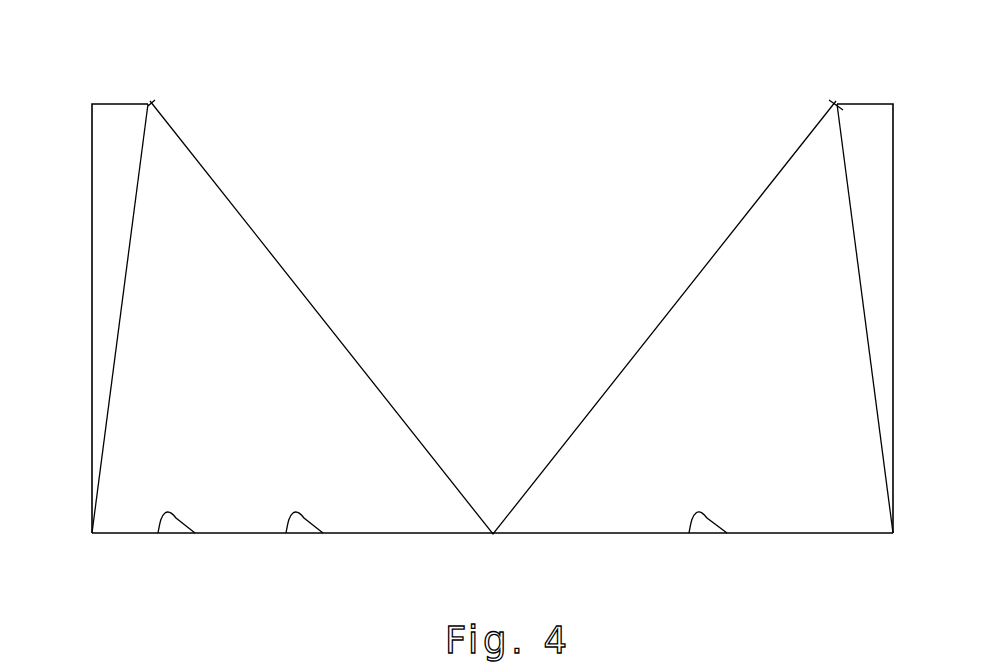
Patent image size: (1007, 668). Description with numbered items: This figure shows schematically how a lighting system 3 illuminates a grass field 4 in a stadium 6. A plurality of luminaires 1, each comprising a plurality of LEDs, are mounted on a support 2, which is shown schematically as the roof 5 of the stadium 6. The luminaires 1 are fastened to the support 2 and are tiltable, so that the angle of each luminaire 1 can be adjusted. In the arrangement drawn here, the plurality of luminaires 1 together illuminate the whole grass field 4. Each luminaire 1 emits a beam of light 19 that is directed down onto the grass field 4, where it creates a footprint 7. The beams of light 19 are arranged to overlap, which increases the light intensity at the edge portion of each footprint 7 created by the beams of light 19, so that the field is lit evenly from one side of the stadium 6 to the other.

The luminaire 1 is at (486, 307).
The support 2 is at (122, 103).
The lighting system 3 is at (230, 95).
The grass field 4 is at (158, 533).
The roof 5 is at (125, 103).
The stadium 6 is at (413, 95).
The footprint 7 is at (286, 533).
The beam of light 19 is at (190, 273).